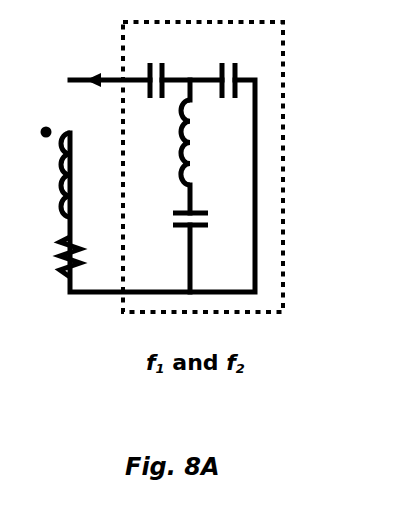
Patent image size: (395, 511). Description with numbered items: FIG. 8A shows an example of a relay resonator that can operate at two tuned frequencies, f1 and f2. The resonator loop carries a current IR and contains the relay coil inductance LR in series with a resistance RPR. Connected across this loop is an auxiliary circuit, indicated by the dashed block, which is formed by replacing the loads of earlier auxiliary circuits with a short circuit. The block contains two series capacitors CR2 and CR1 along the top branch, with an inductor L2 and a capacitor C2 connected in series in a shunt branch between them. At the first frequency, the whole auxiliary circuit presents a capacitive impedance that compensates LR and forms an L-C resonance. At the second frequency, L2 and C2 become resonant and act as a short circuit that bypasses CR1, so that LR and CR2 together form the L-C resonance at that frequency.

The relay resonator current IR is at (91, 62).
The capacitor CR2 is at (156, 66).
The capacitor CR1 is at (221, 66).
The inductor L2 is at (163, 142).
The capacitor C2 is at (173, 221).
The relay resonator inductance LR is at (46, 175).
The parasitic resistance RPR is at (48, 257).